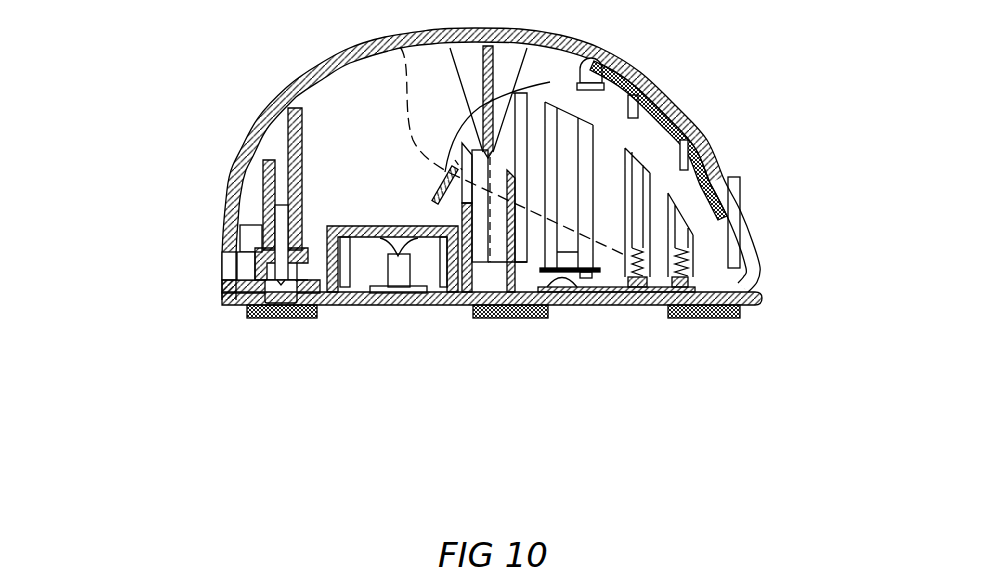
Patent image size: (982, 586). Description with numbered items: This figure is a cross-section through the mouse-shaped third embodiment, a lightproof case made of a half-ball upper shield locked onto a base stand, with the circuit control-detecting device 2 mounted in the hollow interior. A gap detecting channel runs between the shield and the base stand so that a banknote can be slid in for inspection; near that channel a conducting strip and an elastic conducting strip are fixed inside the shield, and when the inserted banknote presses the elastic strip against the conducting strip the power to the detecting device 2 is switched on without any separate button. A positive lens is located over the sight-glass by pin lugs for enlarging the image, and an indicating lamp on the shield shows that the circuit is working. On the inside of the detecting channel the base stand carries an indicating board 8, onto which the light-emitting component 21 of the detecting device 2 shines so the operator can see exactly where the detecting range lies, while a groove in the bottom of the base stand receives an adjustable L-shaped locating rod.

The circuit control-detecting device 2 is at (400, 47).
The indicating board 8 is at (668, 306).
The light-emitting component 21 is at (485, 196).